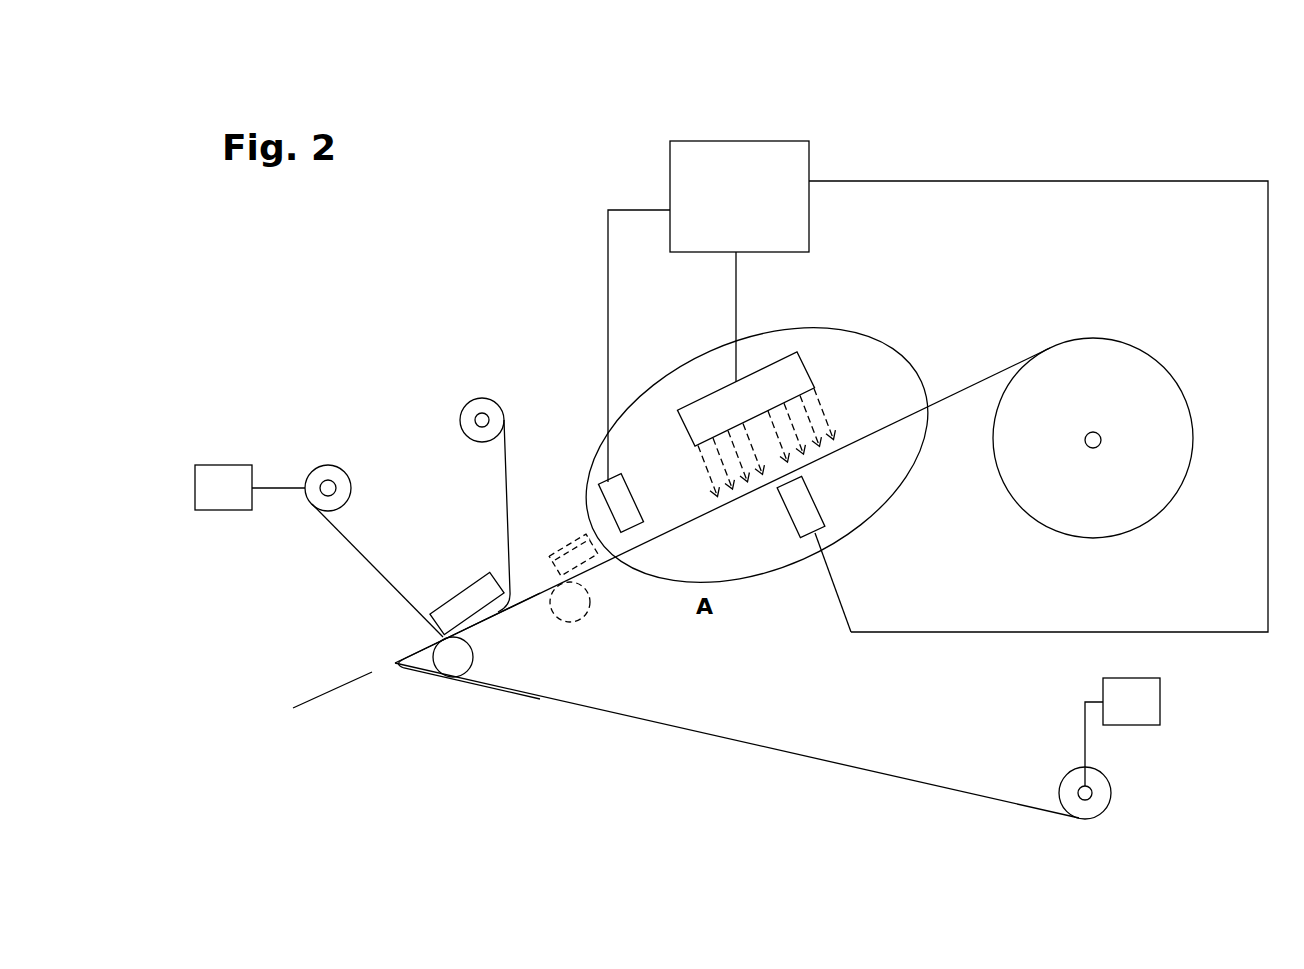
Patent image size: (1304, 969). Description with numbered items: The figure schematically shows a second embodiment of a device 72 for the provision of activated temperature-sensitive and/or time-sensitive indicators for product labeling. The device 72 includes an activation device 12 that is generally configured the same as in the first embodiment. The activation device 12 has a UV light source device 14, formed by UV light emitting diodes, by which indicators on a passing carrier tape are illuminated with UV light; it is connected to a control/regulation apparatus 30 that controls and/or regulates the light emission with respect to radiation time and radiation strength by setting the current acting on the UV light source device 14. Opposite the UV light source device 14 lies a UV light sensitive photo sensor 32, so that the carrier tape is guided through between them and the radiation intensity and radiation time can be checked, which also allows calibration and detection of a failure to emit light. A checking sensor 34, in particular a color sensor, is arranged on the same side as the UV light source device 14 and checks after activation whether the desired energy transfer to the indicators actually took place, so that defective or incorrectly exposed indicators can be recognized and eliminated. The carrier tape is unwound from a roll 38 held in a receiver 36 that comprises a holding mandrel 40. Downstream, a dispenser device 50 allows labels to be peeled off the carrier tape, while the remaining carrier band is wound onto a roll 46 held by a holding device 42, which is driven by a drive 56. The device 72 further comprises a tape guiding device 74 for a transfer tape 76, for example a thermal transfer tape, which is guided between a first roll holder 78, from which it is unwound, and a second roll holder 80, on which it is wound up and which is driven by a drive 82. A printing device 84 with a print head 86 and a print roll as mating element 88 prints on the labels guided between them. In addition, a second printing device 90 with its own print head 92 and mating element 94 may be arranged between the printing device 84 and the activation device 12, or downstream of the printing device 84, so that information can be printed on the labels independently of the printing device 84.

The activation device 12 is at (821, 124).
The UV light source device 14 is at (797, 374).
The control/regulation apparatus 30 is at (741, 160).
The photo sensor 32 is at (813, 510).
The checking sensor 34 is at (624, 503).
The receiver 36 is at (1106, 453).
The roll 38 is at (1094, 352).
The holding mandrel 40 is at (1102, 438).
The holding device 42 is at (1104, 820).
The roll 46 is at (1068, 788).
The dispenser device 50 is at (388, 676).
The drive 56 is at (1160, 702).
The device 72 is at (1013, 86).
The tape guiding device 74 is at (334, 564).
The transfer tape 76 is at (508, 488).
The first roll holder 78 is at (483, 412).
The second roll holder 80 is at (328, 480).
The drive 82 is at (226, 480).
The printing device 84 is at (508, 616).
The print head 86 is at (466, 603).
The mating element 88 is at (454, 668).
The second printing device 90 is at (612, 578).
The print head 92 is at (560, 548).
The mating element 94 is at (572, 618).